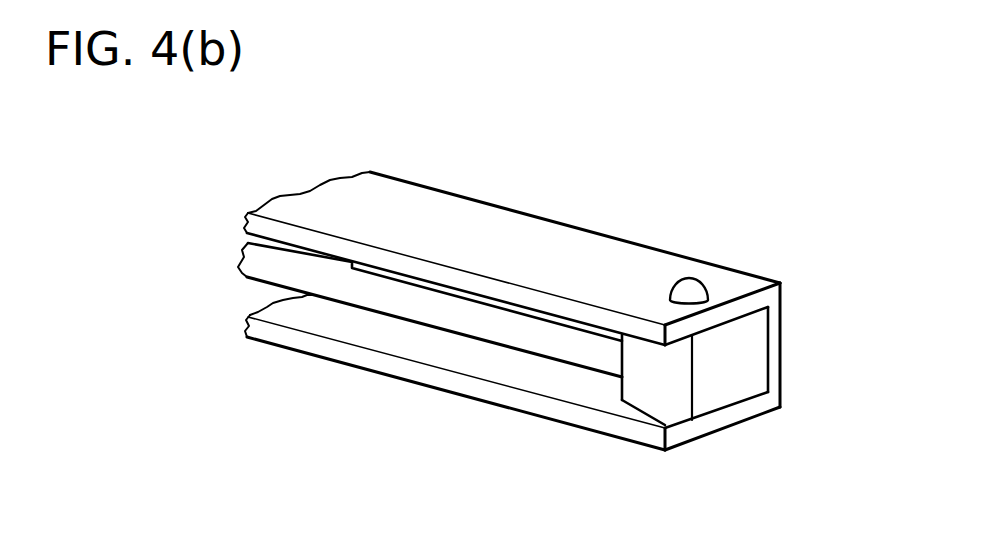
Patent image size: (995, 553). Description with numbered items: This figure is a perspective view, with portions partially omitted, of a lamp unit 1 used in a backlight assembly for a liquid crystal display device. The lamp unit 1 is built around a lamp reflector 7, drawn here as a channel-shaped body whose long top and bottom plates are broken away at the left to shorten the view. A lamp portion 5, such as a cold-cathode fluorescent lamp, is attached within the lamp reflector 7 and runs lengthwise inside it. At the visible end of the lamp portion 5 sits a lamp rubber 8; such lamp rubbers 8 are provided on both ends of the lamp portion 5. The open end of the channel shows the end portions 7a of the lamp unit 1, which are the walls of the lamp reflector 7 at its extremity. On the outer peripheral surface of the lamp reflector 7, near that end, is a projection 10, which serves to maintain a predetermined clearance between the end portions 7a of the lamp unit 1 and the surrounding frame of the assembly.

The lamp unit 1 is at (750, 254).
The lamp portion 5 is at (368, 293).
The lamp reflector 7 is at (485, 236).
The end portion 7a is at (727, 315).
The lamp rubber 8 is at (663, 383).
The projection 10 is at (690, 287).